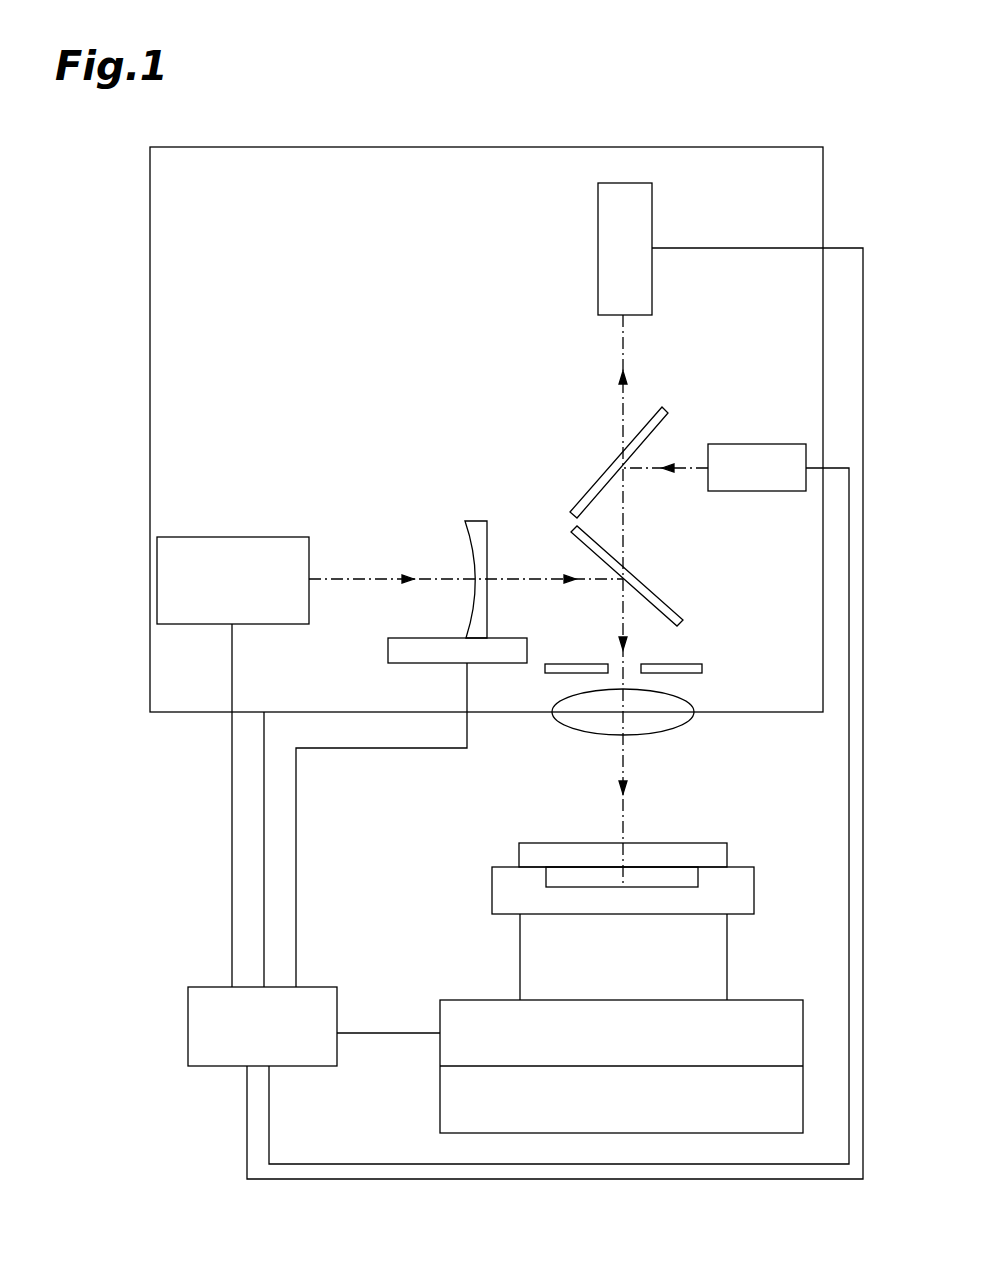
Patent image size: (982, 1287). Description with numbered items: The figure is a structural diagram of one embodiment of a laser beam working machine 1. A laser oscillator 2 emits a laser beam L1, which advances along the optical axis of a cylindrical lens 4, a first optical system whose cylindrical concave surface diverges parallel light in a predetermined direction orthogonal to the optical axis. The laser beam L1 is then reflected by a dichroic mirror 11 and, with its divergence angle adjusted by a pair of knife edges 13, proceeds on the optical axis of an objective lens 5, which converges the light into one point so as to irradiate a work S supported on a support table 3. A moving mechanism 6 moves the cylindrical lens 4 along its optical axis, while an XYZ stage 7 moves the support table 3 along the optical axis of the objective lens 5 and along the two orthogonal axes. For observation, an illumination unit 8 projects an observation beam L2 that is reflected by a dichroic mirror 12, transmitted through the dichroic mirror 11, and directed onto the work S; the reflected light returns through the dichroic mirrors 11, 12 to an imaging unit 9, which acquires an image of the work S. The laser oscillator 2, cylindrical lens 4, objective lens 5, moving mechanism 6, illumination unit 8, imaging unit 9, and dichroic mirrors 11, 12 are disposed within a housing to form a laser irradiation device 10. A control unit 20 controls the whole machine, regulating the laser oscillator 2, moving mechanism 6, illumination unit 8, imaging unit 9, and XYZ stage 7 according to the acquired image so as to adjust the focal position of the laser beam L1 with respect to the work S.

The laser beam working machine 1 is at (735, 131).
The laser irradiation device 10 is at (297, 147).
The imaging unit 9 is at (652, 216).
The illumination unit 8 is at (756, 444).
The observation beam L2 is at (694, 465).
The dichroic mirror 12 is at (588, 490).
The dichroic mirror 11 is at (670, 602).
The laser oscillator 2 is at (232, 537).
The laser beam L1 is at (342, 575).
The cylindrical lens 4 is at (478, 521).
The moving mechanism 6 is at (388, 648).
The pair of knife edges 13 is at (664, 664).
The objective lens 5 is at (668, 692).
The work S is at (673, 843).
The support table 3 is at (755, 883).
The XYZ stage 7 is at (812, 914).
The control unit 20 is at (208, 987).